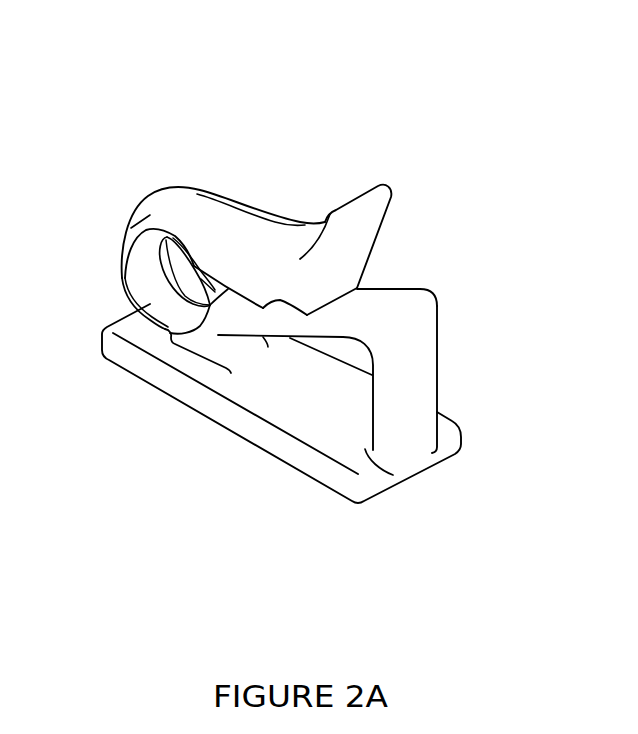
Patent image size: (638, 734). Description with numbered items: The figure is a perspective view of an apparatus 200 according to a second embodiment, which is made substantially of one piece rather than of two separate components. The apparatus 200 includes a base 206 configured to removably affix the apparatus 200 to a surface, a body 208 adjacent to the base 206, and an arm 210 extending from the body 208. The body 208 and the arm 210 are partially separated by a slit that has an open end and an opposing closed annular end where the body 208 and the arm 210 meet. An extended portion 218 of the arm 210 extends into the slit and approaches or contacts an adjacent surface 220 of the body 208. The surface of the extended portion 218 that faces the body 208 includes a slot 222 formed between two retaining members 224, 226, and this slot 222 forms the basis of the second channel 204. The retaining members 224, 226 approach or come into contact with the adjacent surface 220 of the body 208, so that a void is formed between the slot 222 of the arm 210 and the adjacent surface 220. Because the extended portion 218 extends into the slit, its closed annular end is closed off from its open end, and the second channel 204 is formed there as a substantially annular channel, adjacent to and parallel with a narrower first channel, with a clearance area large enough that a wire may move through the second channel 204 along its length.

The apparatus 200 is at (489, 96).
The second channel 204 is at (188, 275).
The base 206 is at (457, 440).
The body 208 is at (410, 367).
The arm 210 is at (253, 217).
The extended portion 218 is at (348, 252).
The adjacent surface 220 is at (375, 300).
The slot 222 is at (281, 297).
The retaining member 224 is at (263, 309).
The retaining member 226 is at (307, 315).